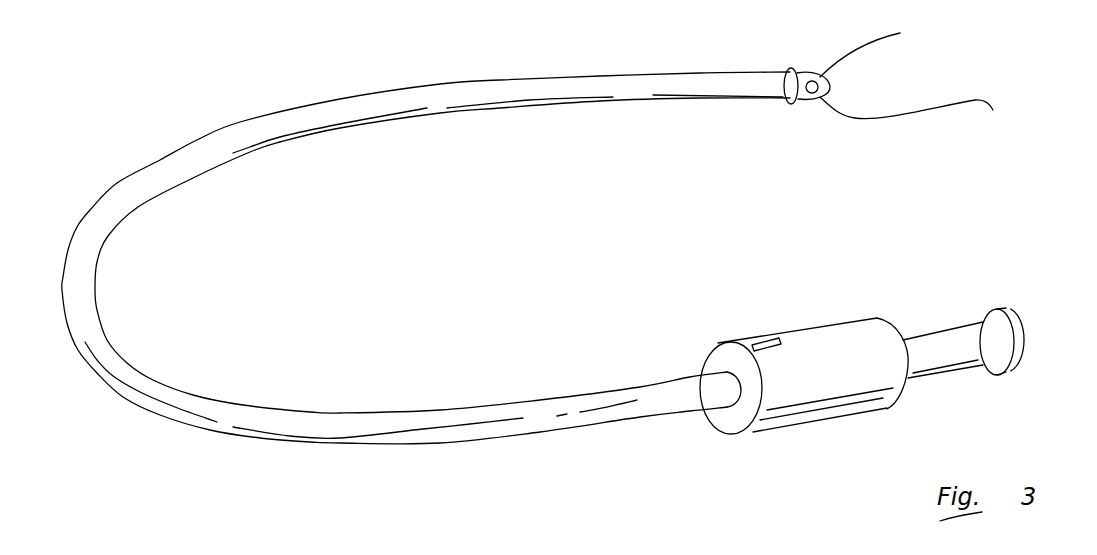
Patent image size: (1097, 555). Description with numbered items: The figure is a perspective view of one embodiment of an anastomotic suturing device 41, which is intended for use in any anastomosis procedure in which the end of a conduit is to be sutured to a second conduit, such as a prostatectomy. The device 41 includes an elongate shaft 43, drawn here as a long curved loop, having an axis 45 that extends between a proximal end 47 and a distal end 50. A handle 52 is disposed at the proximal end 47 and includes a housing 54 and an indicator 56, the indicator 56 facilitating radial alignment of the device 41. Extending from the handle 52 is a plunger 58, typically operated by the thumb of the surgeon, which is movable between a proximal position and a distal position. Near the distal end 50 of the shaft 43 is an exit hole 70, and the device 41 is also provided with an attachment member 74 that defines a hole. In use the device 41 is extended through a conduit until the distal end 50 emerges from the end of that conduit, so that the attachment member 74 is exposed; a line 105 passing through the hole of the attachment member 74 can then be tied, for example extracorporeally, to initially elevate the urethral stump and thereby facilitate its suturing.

The anastomotic suturing device 41 is at (925, 216).
The elongate shaft 43 is at (380, 427).
The axis 45 is at (532, 418).
The proximal end 47 is at (665, 365).
The distal end 50 is at (735, 123).
The handle 52 is at (757, 448).
The housing 54 is at (883, 367).
The indicator 56 is at (762, 341).
The plunger 58 is at (997, 348).
The exit hole 70 is at (786, 76).
The attachment member 74 is at (828, 93).
The line 105 is at (900, 116).